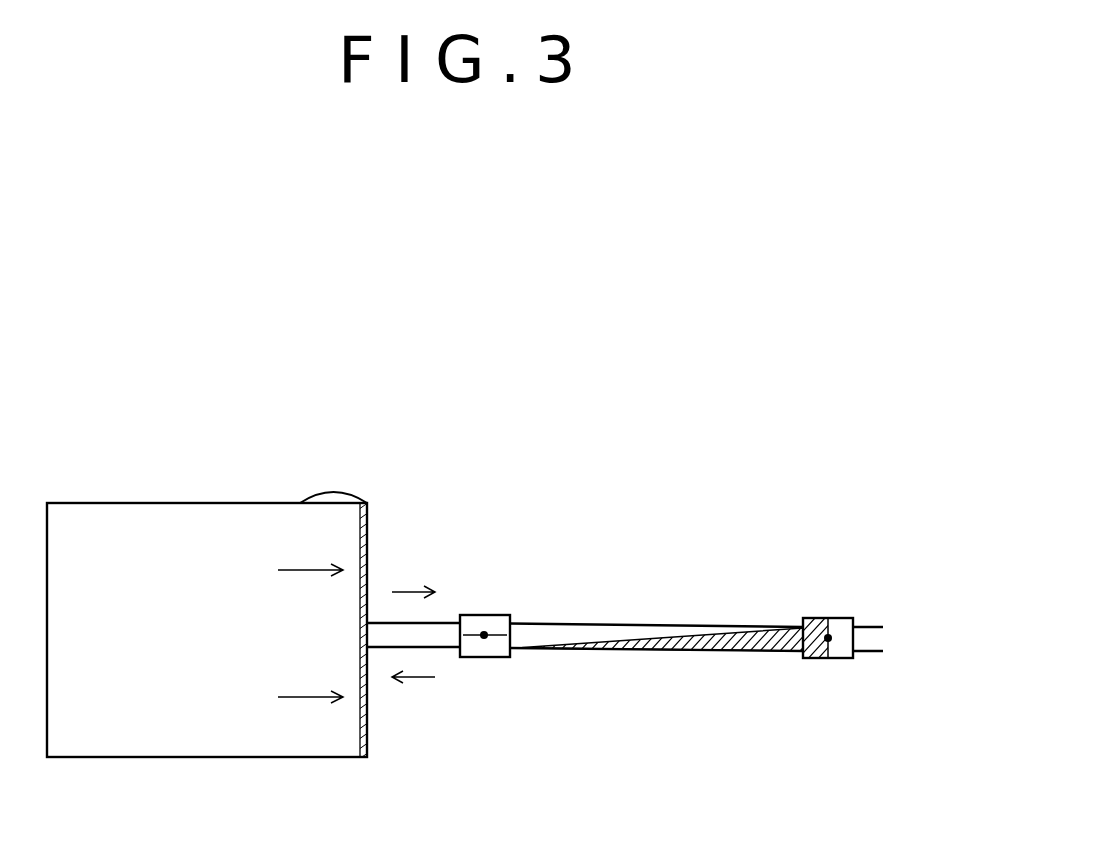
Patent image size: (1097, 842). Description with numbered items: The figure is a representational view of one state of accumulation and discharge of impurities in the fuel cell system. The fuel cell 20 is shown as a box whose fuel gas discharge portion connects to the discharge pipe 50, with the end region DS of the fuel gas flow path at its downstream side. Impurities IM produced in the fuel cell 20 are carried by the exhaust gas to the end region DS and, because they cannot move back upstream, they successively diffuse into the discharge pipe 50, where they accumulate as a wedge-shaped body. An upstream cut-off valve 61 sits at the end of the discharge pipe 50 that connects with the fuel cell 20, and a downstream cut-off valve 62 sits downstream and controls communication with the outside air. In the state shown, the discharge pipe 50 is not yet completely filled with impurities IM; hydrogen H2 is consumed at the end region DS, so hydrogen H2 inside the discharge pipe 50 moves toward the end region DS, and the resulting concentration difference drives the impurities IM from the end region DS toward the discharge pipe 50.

The fuel cell 20 is at (160, 503).
The end region DS is at (333, 492).
The impurities IM is at (368, 540).
The hydrogen H2 is at (577, 580).
The discharge pipe 50 is at (655, 625).
The upstream cut-off valve 61 is at (485, 615).
The downstream cut-off valve 62 is at (833, 660).